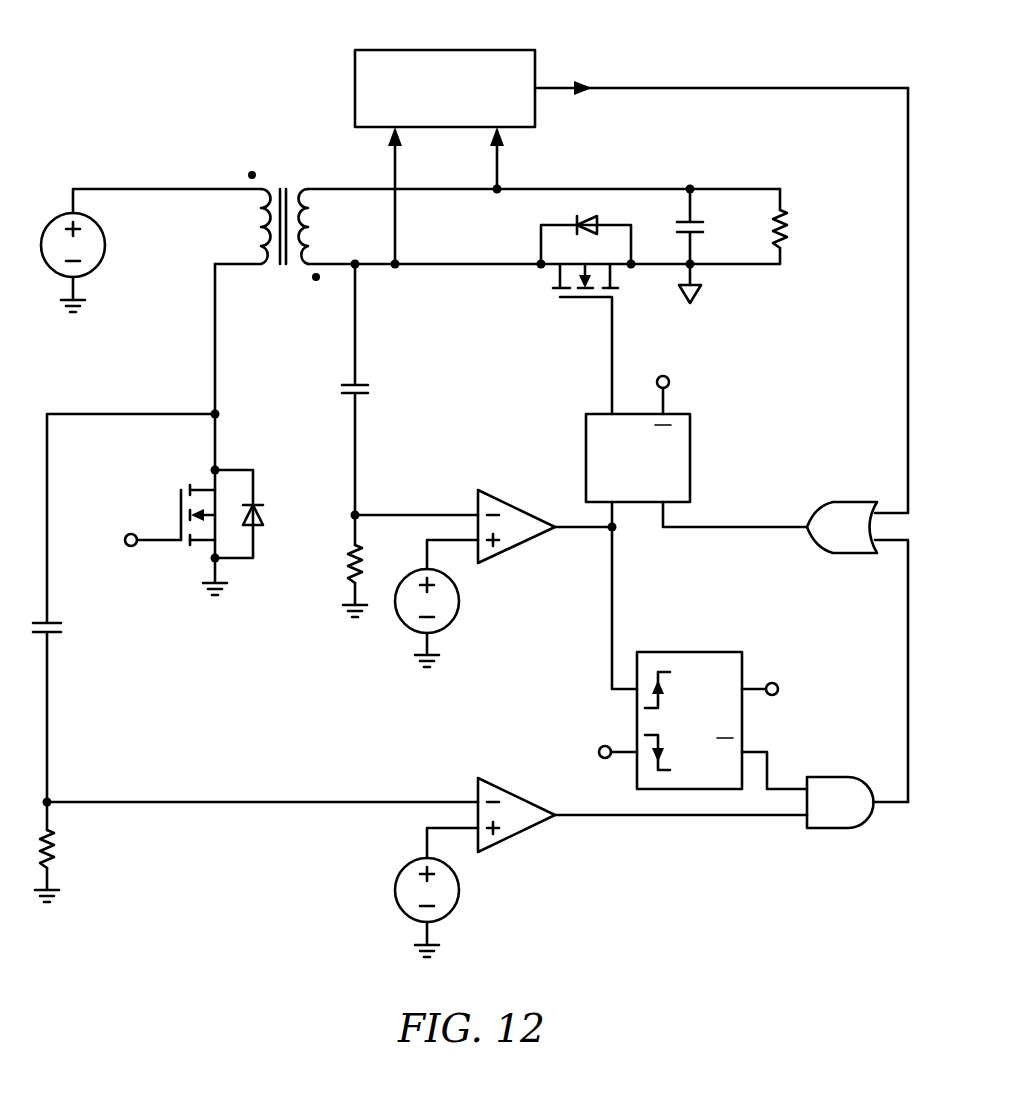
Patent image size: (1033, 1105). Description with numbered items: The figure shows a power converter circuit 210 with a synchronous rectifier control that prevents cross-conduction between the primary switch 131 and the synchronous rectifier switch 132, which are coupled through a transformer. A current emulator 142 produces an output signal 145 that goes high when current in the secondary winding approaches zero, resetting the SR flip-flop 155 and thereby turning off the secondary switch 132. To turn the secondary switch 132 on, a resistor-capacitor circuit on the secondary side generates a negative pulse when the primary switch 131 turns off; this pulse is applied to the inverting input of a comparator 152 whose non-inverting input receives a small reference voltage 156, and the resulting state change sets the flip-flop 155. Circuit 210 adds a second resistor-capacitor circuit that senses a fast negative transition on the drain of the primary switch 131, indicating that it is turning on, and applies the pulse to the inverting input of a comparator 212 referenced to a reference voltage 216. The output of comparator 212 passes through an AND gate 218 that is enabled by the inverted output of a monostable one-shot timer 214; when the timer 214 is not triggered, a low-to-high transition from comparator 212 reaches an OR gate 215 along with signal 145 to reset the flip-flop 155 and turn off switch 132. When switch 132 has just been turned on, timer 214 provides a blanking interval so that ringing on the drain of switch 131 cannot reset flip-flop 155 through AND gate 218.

The power converter circuit 210 is at (157, 77).
The current emulator 142 is at (355, 75).
The output signal 145 is at (701, 88).
The primary switch 131 is at (159, 509).
The synchronous rectifier switch 132 is at (575, 312).
The comparator 152 is at (540, 488).
The SR flip-flop 155 is at (690, 455).
The reference voltage 156 is at (459, 600).
The comparator 212 is at (540, 777).
The timer 214 is at (706, 652).
The OR gate 215 is at (830, 556).
The reference voltage 216 is at (459, 890).
The AND gate 218 is at (838, 830).